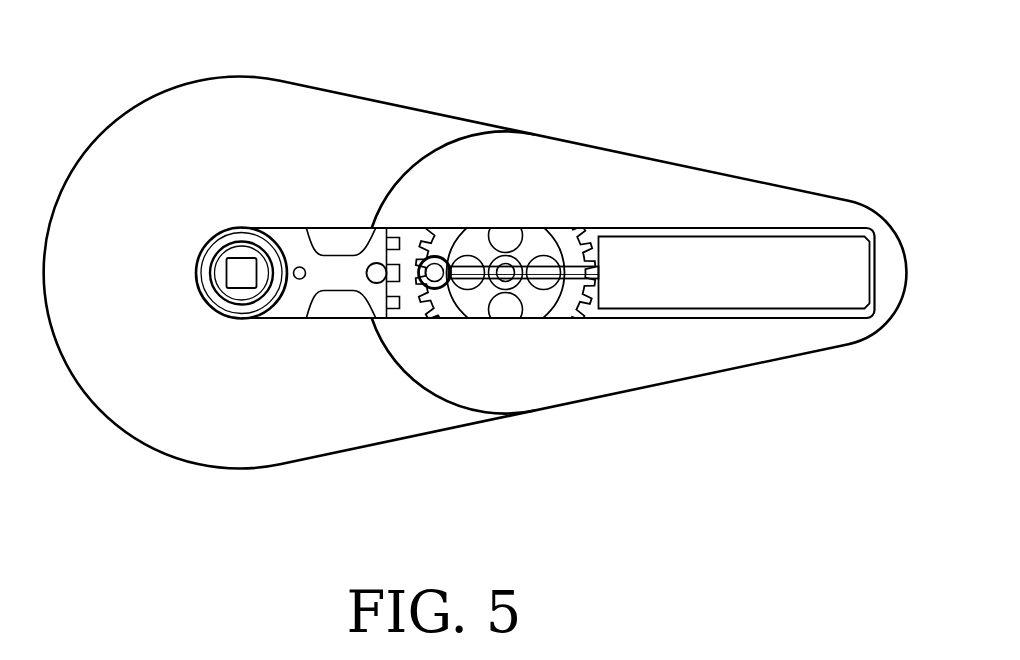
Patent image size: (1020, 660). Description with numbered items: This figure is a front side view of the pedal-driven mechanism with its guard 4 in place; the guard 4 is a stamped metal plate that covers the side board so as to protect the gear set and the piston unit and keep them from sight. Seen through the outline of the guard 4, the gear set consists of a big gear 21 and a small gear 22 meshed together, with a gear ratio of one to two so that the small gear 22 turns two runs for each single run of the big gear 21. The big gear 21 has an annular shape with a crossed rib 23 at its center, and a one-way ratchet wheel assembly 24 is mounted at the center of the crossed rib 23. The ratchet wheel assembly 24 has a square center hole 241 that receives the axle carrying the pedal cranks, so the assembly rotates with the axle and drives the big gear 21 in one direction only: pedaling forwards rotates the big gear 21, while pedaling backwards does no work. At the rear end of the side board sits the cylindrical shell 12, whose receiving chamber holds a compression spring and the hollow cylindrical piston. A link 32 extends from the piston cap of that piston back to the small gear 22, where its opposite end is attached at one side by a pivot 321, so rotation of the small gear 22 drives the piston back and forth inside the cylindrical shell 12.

The guard 4 is at (330, 88).
The cylindrical shell 12 is at (760, 290).
The big gear 21 is at (395, 245).
The small gear 22 is at (560, 232).
The crossed rib 23 is at (330, 288).
The one-way ratchet wheel assembly 24 is at (233, 303).
The square center hole 241 is at (237, 268).
The link 32 is at (527, 274).
The pivot 321 is at (433, 283).